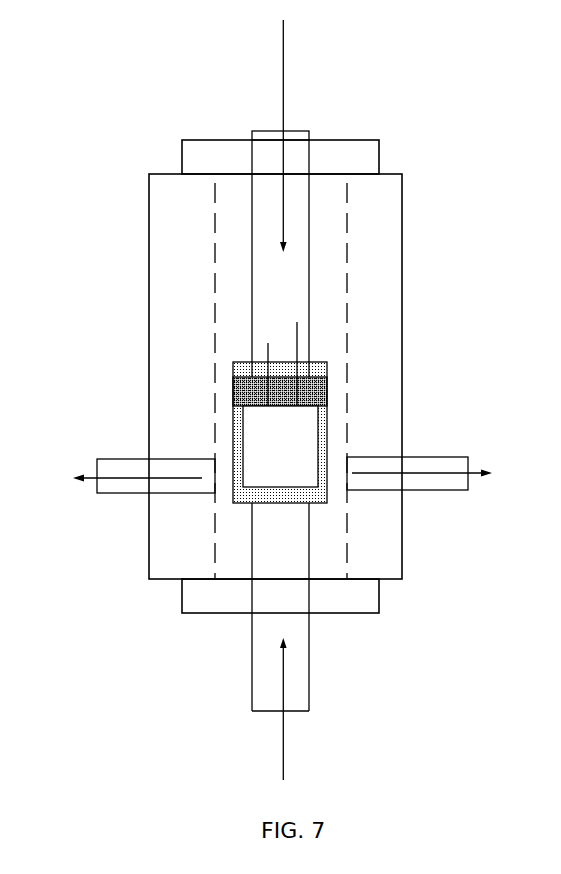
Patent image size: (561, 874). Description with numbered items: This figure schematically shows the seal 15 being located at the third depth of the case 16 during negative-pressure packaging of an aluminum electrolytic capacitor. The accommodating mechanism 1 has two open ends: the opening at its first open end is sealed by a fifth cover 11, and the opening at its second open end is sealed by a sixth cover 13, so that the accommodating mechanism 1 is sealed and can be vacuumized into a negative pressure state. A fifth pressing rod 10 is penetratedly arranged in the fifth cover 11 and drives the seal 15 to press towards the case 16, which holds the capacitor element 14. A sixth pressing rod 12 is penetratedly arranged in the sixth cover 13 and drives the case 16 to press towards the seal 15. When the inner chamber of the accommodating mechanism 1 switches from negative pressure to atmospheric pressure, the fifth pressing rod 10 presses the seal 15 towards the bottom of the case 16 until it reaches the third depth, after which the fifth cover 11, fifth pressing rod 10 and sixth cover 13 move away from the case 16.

The accommodating mechanism 1 is at (173, 233).
The fifth pressing rod 10 is at (297, 283).
The fifth cover 11 is at (367, 152).
The sixth pressing rod 12 is at (302, 678).
The sixth cover 13 is at (363, 599).
The capacitor element 14 is at (297, 453).
The seal 15 is at (317, 396).
The cases 16 is at (239, 434).